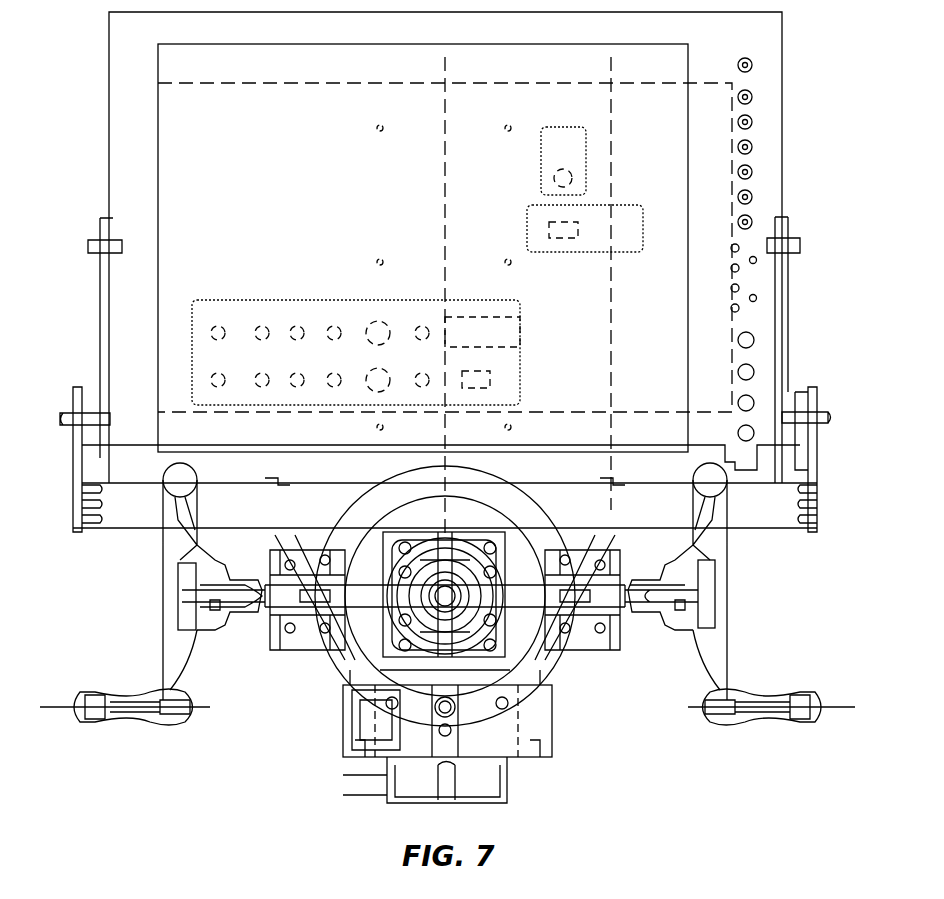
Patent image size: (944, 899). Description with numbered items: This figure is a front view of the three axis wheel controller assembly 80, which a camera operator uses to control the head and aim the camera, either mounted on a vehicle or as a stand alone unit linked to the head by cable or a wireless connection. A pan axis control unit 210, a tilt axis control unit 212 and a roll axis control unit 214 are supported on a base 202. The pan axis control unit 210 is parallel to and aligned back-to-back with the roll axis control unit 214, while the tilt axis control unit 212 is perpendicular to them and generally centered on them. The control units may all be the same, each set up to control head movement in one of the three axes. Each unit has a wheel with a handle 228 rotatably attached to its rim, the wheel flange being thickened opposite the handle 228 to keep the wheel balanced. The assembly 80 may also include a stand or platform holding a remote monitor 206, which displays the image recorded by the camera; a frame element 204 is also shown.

The wheel controller assembly 80 is at (155, 595).
The base 202 is at (537, 717).
The frame 204 is at (757, 512).
The remote monitor 206 is at (755, 162).
The pan axis control unit 210 is at (270, 650).
The tilt axis control unit 212 is at (367, 700).
The roll axis control unit 214 is at (598, 660).
The handle 228 is at (765, 690).